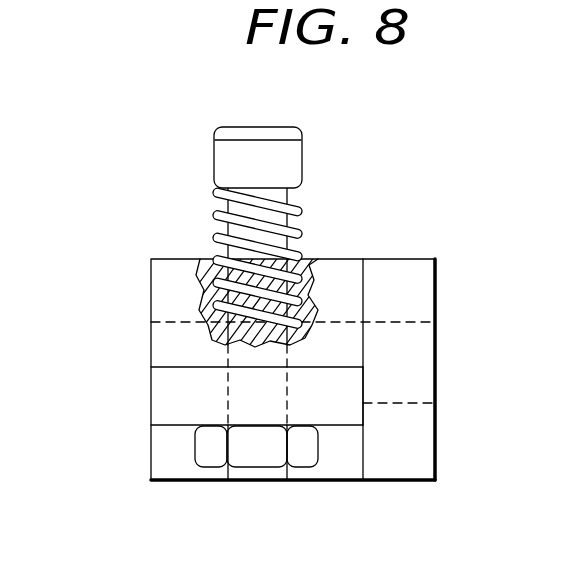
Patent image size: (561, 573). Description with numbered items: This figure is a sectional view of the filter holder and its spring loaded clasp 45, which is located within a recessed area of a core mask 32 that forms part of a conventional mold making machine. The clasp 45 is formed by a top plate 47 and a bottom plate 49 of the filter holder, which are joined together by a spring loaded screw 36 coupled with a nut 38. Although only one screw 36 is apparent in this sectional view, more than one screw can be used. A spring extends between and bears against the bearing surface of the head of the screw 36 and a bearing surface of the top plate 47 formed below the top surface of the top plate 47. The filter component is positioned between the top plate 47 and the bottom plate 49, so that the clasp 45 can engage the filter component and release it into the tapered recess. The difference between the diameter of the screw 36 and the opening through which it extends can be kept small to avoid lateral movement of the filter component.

The core mask 32 is at (303, 232).
The screw 36 is at (302, 131).
The nut 38 is at (209, 470).
The spring loaded clasp 45 is at (100, 412).
The top plate 47 is at (151, 287).
The bottom plate 49 is at (319, 407).